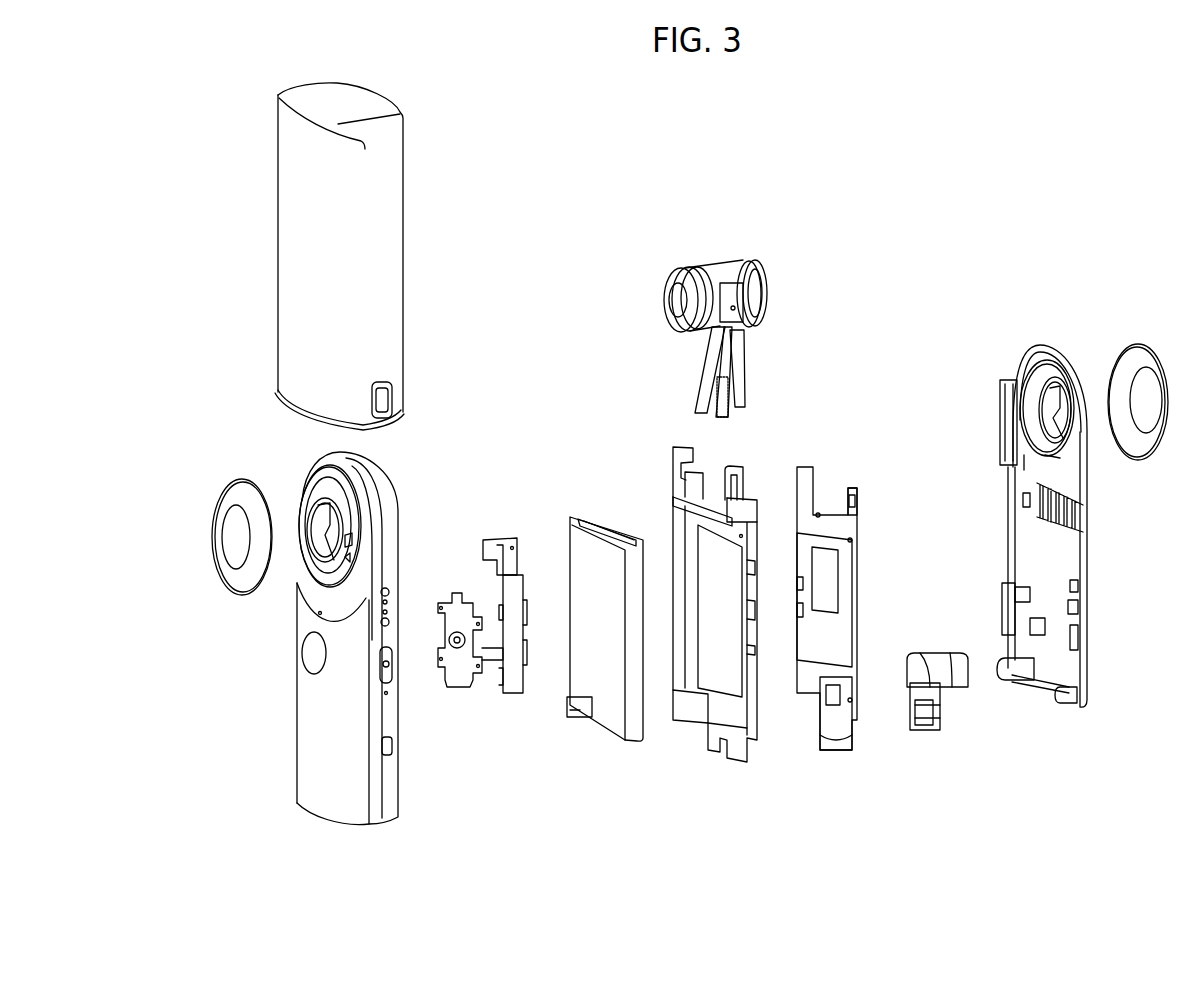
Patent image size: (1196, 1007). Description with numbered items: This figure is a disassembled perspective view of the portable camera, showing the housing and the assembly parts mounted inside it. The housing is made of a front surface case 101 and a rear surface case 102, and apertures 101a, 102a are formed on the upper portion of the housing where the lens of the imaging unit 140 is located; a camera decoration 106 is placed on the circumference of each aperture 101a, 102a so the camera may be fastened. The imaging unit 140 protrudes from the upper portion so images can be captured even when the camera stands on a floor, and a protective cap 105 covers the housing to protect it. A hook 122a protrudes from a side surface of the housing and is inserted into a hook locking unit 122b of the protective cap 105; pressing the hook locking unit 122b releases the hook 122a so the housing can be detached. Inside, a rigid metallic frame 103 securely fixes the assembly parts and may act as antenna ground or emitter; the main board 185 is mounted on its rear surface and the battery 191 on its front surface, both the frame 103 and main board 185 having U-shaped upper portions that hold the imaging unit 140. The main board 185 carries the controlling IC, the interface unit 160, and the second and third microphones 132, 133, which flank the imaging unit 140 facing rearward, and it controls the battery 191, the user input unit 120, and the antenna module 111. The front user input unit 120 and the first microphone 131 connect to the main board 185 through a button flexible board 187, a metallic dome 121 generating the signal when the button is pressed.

The front surface case 101 is at (310, 735).
The aperture 101a is at (318, 486).
The rear surface case 102 is at (1058, 570).
The aperture 102a is at (1057, 393).
The frame 103 is at (707, 675).
The protective cap 105 is at (383, 273).
The camera decoration 106 is at (226, 492).
The antenna module 111 is at (1000, 397).
The user input unit 120 is at (306, 657).
The metallic dome 121 is at (452, 638).
The hook 122a is at (396, 748).
The hook locking unit 122b is at (386, 398).
The first microphone 131 is at (485, 545).
The second microphone 132 is at (797, 460).
The third microphone 133 is at (850, 487).
The imaging unit 140 is at (707, 268).
The interface unit 160 is at (932, 730).
The main board 185 is at (832, 528).
The button flexible board 187 is at (512, 700).
The battery 191 is at (578, 518).